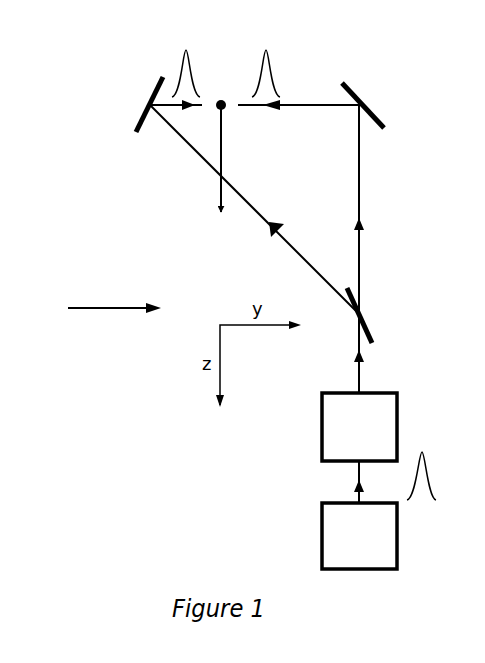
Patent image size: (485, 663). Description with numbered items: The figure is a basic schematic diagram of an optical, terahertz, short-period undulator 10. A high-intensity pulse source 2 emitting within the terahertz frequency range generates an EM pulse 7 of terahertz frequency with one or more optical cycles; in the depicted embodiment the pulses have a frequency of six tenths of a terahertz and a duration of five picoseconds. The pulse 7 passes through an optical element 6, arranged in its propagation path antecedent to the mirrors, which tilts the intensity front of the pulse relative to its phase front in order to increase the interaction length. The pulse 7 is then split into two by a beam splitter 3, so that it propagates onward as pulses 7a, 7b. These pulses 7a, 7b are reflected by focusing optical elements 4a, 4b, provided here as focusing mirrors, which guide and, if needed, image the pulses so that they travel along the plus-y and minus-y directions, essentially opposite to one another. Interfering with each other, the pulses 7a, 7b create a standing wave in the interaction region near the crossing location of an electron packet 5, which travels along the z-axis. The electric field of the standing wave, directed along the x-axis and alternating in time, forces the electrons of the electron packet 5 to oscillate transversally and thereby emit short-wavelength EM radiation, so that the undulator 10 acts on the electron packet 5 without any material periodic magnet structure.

The high-intensity pulse source 2 is at (341, 536).
The beam splitter 3 is at (374, 315).
The focusing optical element 4a is at (132, 104).
The focusing optical element 4b is at (379, 105).
The electron packet 5 is at (229, 122).
The optical element 6 is at (341, 427).
The EM pulse 7 is at (434, 479).
The pulse 7a is at (189, 52).
The pulse 7b is at (266, 52).
The optical short-period undulator 10 is at (91, 309).